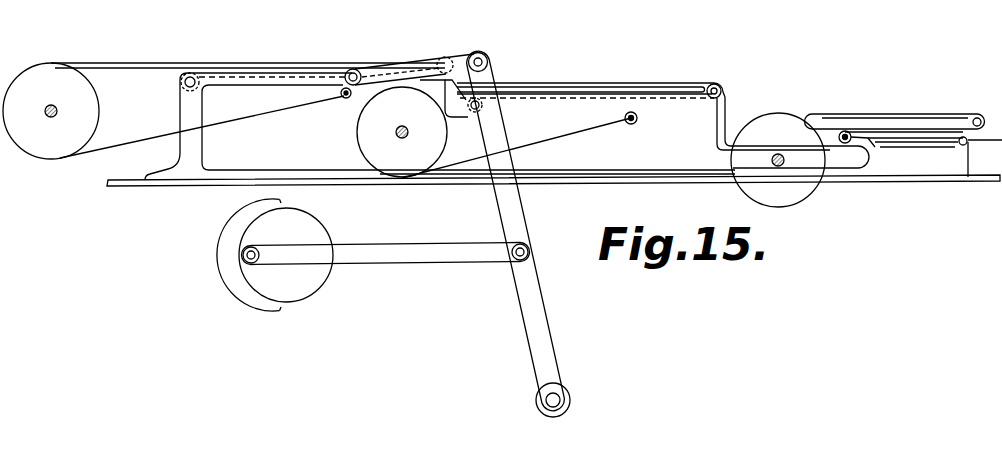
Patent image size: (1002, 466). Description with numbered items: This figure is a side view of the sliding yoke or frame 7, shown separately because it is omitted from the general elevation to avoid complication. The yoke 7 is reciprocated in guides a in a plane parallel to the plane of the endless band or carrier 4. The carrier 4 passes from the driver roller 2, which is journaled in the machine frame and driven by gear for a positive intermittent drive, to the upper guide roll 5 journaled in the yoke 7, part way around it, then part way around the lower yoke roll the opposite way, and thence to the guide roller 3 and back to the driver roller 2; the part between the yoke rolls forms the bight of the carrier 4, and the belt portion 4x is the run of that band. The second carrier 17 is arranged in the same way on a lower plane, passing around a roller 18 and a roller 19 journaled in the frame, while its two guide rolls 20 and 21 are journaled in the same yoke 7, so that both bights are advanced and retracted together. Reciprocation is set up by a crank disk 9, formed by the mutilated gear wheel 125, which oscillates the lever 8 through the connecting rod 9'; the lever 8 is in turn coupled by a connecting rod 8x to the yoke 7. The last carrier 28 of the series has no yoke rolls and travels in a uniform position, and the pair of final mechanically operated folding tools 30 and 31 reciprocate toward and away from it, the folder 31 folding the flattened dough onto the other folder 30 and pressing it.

The roller 2 is at (99, 114).
The belt 4x is at (125, 70).
The endless band or carrier 4 is at (193, 75).
The sliding yoke or frame 7 is at (197, 147).
The roller 3 is at (343, 98).
The guide roll 5 is at (443, 60).
The connecting rod 8x is at (474, 52).
The oscillating lever 8 is at (521, 309).
The guide roll 21 is at (470, 114).
The second carrier 17 is at (547, 84).
The roller 18 is at (448, 128).
The roller 19 is at (637, 120).
The guide roll 20 is at (722, 88).
The guides a is at (364, 181).
The carrier 28 is at (876, 113).
The final folding tool 30 is at (898, 136).
The final folding tool 31 is at (987, 141).
The crank disk 9 is at (269, 255).
The mutilated gear wheel 125 is at (231, 270).
The connecting rod 9' is at (386, 272).